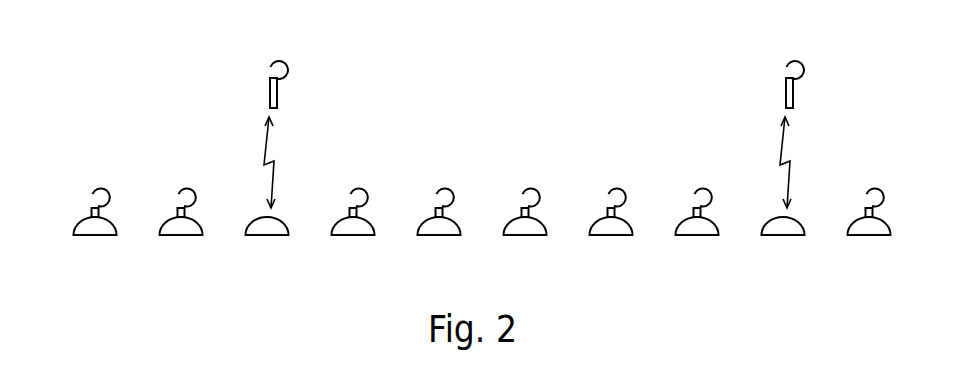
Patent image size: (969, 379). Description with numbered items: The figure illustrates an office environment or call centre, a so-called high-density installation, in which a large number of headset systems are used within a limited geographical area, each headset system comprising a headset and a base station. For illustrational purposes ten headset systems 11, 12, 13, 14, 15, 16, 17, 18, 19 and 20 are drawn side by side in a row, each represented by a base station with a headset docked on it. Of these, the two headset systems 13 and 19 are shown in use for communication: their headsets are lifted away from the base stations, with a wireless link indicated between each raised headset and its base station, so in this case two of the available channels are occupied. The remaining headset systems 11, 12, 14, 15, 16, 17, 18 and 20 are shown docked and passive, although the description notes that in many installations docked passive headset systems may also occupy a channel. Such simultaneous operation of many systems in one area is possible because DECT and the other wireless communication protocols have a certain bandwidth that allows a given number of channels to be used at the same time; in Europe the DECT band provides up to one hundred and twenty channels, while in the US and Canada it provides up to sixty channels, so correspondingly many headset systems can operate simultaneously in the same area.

The headset system 11 is at (90, 237).
The headset system 12 is at (176, 237).
The headset system 13 is at (262, 237).
The headset system 14 is at (348, 237).
The headset system 15 is at (434, 237).
The headset system 16 is at (520, 237).
The headset system 17 is at (606, 237).
The headset system 18 is at (692, 237).
The headset system 19 is at (778, 237).
The headset system 20 is at (864, 237).